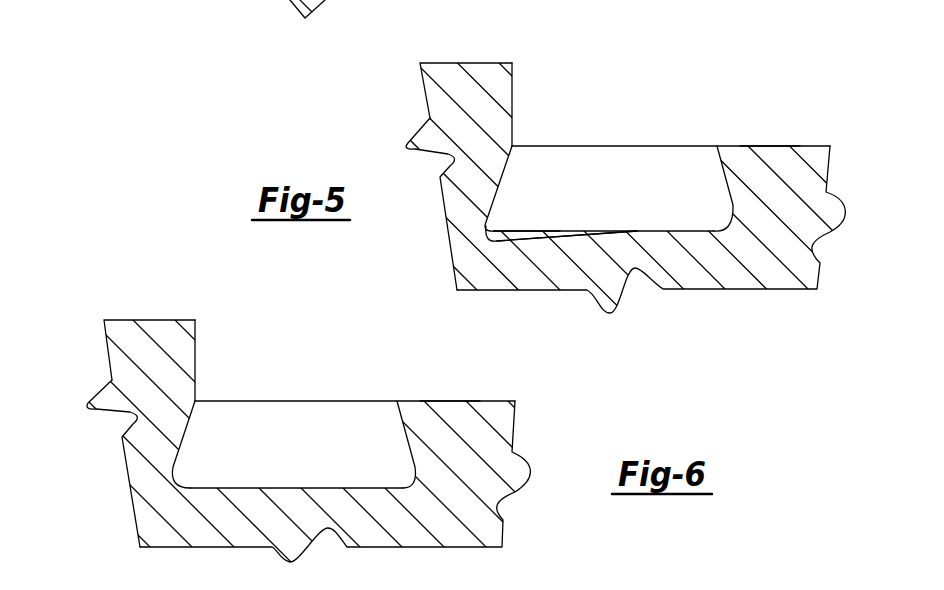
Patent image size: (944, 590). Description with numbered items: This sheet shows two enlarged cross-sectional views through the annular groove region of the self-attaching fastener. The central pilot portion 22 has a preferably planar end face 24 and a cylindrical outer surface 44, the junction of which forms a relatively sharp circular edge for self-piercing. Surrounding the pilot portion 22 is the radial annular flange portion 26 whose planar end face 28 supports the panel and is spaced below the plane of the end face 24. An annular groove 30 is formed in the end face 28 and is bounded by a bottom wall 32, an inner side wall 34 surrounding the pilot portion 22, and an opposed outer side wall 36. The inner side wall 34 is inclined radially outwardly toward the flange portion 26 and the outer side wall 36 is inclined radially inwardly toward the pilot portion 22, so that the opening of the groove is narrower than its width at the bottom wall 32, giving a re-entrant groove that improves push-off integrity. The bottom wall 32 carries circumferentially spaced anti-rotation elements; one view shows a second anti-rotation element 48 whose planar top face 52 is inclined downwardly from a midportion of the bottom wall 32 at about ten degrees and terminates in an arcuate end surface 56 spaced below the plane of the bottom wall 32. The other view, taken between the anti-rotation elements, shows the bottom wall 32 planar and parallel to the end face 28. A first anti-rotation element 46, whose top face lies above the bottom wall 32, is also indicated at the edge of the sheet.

In FIG. 5, the central pilot portion 22 is at (442, 114).
In FIG. 6, the central pilot portion 22 is at (124, 370).
In FIG. 5, the end face of pilot portion 24 is at (485, 62).
In FIG. 6, the end face of pilot portion 24 is at (155, 320).
In FIG. 5, the radial annular flange portion 26 is at (810, 176).
In FIG. 6, the radial annular flange portion 26 is at (497, 434).
In FIG. 5, the end face of flange portion 28 is at (767, 146).
In FIG. 6, the end face of flange portion 28 is at (448, 401).
In FIG. 5, the annular groove 30 is at (648, 146).
In FIG. 6, the annular groove 30 is at (330, 404).
In FIG. 5, the bottom wall 32 is at (667, 229).
In FIG. 6, the bottom wall 32 is at (293, 486).
In FIG. 5, the inner side wall 34 is at (517, 175).
In FIG. 6, the inner side wall 34 is at (186, 440).
In FIG. 5, the outer side wall 36 is at (712, 165).
In FIG. 6, the outer side wall 36 is at (407, 445).
In FIG. 5, the cylindrical outer surface 44 is at (512, 97).
In FIG. 6, the cylindrical outer surface 44 is at (195, 352).
In FIG. 5, the first plurality of circumferentially spaced anti-rotation elements 46 is at (167, 0).
In FIG. 5, the second plurality of circumferentially spaced anti-rotation elements 48 is at (516, 242).
In FIG. 5, the top face of second anti-rotation elements 52 is at (545, 230).
In FIG. 5, the arcuate end surface 56 is at (512, 229).